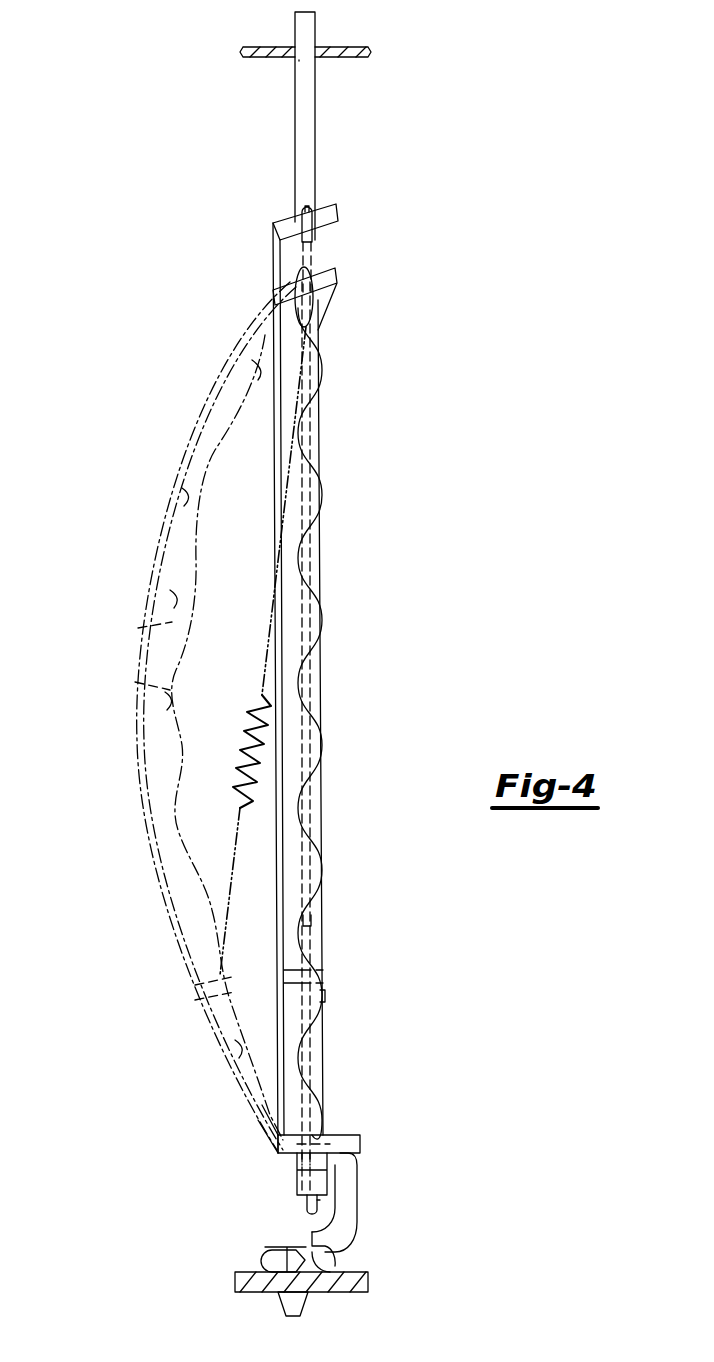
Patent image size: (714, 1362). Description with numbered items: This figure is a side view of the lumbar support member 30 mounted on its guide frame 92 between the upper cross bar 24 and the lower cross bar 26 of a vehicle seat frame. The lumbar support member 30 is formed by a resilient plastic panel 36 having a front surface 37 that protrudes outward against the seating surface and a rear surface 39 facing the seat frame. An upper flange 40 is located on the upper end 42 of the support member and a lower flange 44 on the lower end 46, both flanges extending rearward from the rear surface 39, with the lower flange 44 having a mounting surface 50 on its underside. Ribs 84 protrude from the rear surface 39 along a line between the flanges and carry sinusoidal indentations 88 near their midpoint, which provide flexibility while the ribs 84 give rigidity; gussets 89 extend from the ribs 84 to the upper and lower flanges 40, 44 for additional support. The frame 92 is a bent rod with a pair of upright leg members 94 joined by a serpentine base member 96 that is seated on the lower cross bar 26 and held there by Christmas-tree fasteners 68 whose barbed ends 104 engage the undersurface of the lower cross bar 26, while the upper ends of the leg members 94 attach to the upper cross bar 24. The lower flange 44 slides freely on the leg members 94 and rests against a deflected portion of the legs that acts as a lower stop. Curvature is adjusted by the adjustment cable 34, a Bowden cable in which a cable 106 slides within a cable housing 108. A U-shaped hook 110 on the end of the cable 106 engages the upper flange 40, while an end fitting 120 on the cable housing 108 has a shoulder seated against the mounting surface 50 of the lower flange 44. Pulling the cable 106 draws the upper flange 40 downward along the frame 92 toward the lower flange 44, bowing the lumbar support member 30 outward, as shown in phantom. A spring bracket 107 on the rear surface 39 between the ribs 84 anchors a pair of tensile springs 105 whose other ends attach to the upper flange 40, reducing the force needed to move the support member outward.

The upper cross bar 24 is at (350, 46).
The lower cross bar 26 is at (365, 1282).
The lumbar support member 30 is at (213, 716).
The adjustment cable 34 is at (322, 1205).
The panel 36 is at (152, 548).
The front surface 37 is at (195, 426).
The rear surface 39 is at (172, 500).
The upper flange 40 is at (338, 213).
The upper end 42 is at (273, 248).
The lower flange 44 is at (348, 1133).
The lower end 46 is at (278, 1120).
The mounting surface 50 is at (362, 1166).
The fastener 68 is at (280, 1248).
The ribs 84 is at (322, 425).
The indentations 88 is at (135, 682).
The gussets 89 is at (262, 370).
The frame 92 is at (292, 115).
The leg members 94 is at (299, 150).
The base member 96 is at (330, 1260).
The barbed end 104 is at (293, 1300).
The tensile springs 105 is at (318, 234).
The cable 106 is at (323, 1000).
The spring bracket 107 is at (318, 975).
The cable housing 108 is at (305, 1206).
The hook 110 is at (307, 194).
The end fitting 120 is at (300, 1160).